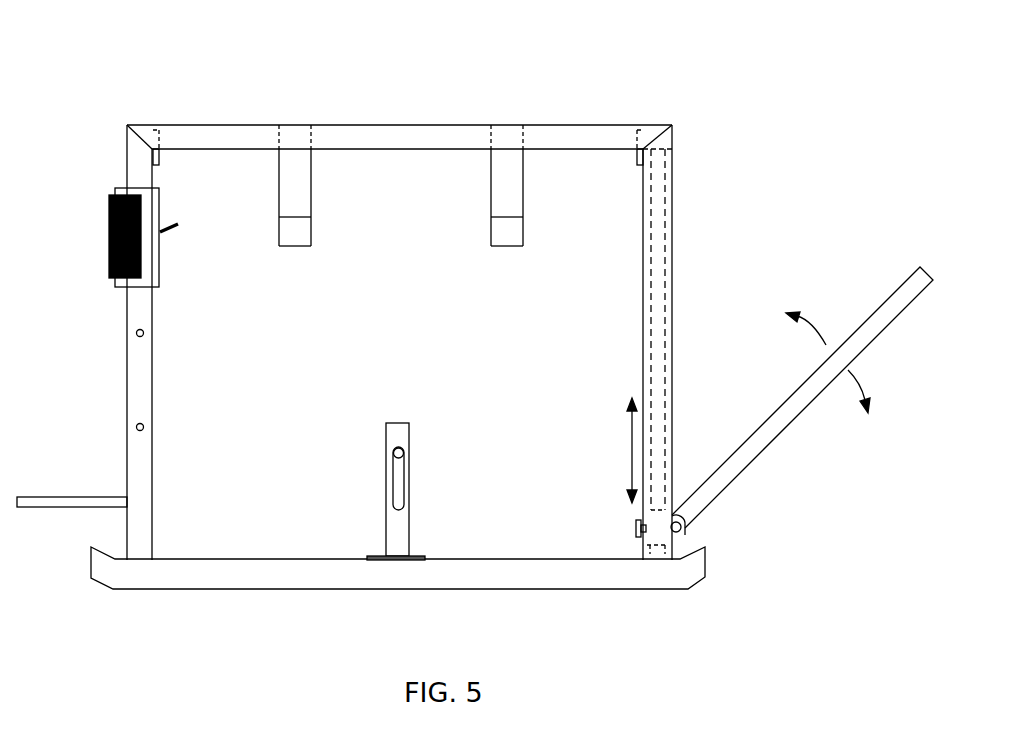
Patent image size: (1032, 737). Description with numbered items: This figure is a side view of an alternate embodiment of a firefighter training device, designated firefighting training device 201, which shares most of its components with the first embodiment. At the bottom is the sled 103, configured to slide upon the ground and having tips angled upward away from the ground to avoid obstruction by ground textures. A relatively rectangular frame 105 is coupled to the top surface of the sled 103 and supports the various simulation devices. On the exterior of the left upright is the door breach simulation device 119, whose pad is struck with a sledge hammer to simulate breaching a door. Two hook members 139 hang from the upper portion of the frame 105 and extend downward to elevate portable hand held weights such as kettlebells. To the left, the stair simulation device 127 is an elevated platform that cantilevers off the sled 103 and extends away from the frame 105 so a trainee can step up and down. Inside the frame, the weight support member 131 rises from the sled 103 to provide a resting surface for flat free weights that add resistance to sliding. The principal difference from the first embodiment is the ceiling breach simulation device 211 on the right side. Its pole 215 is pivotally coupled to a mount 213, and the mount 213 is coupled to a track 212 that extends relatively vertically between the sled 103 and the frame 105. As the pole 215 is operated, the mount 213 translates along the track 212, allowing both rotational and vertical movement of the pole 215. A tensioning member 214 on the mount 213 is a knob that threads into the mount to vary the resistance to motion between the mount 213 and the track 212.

The firefighting training device 201 is at (399, 285).
The frame 105 is at (405, 104).
The door breach simulation device 119 is at (97, 208).
The hook member 139 is at (311, 237).
The stair simulation device 127 is at (62, 497).
The sled 103 is at (243, 589).
The weight support member 131 is at (368, 477).
The track 212 is at (665, 238).
The tensioning member 214 is at (620, 530).
The mount 213 is at (690, 538).
The pole 215 is at (790, 424).
The ceiling breach simulation device 211 is at (802, 352).